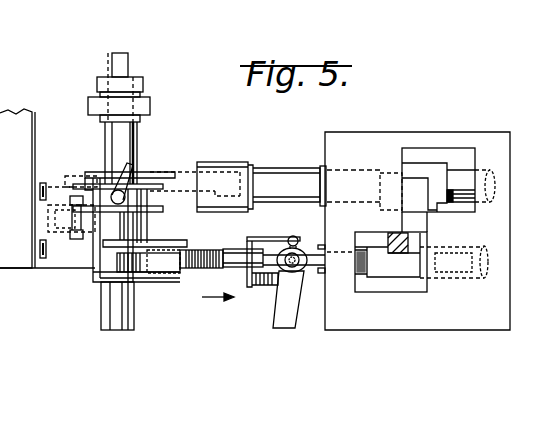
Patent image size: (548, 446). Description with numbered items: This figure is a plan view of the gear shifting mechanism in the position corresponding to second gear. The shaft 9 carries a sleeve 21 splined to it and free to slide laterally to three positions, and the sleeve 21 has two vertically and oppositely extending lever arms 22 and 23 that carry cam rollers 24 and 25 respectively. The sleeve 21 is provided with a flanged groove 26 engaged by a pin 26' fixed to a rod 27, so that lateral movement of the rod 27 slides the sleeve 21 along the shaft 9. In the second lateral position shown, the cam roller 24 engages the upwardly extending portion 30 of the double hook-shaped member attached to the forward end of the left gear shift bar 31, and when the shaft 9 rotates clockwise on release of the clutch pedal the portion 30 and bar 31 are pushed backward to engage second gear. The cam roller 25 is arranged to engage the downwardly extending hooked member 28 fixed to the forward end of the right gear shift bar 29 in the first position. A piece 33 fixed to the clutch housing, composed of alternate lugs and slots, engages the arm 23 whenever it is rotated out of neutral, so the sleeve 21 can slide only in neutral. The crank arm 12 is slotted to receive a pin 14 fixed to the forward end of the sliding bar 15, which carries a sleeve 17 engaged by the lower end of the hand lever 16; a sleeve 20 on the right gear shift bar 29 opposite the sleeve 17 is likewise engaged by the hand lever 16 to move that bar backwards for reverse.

The shaft 9 is at (108, 312).
The crank arm 12 is at (283, 307).
The pin 14 is at (293, 236).
The sliding bar 15 is at (307, 257).
The hand lever 16 is at (410, 234).
The sleeve 17 is at (410, 272).
The sleeve 20 is at (421, 165).
The sleeve 21 is at (95, 278).
The lever arm 22 is at (170, 245).
The lever arm 23 is at (80, 237).
The cam roller 24 is at (188, 249).
The cam roller 25 is at (47, 222).
The flanged groove 26 is at (134, 204).
The pin 26' is at (137, 177).
The rod 27 is at (117, 137).
The hooked member 28 is at (183, 173).
The right gear shift bar 29 is at (463, 177).
The upwardly extending portion 30 is at (230, 252).
The left gear shift bar 31 is at (480, 248).
The piece 33 is at (62, 177).